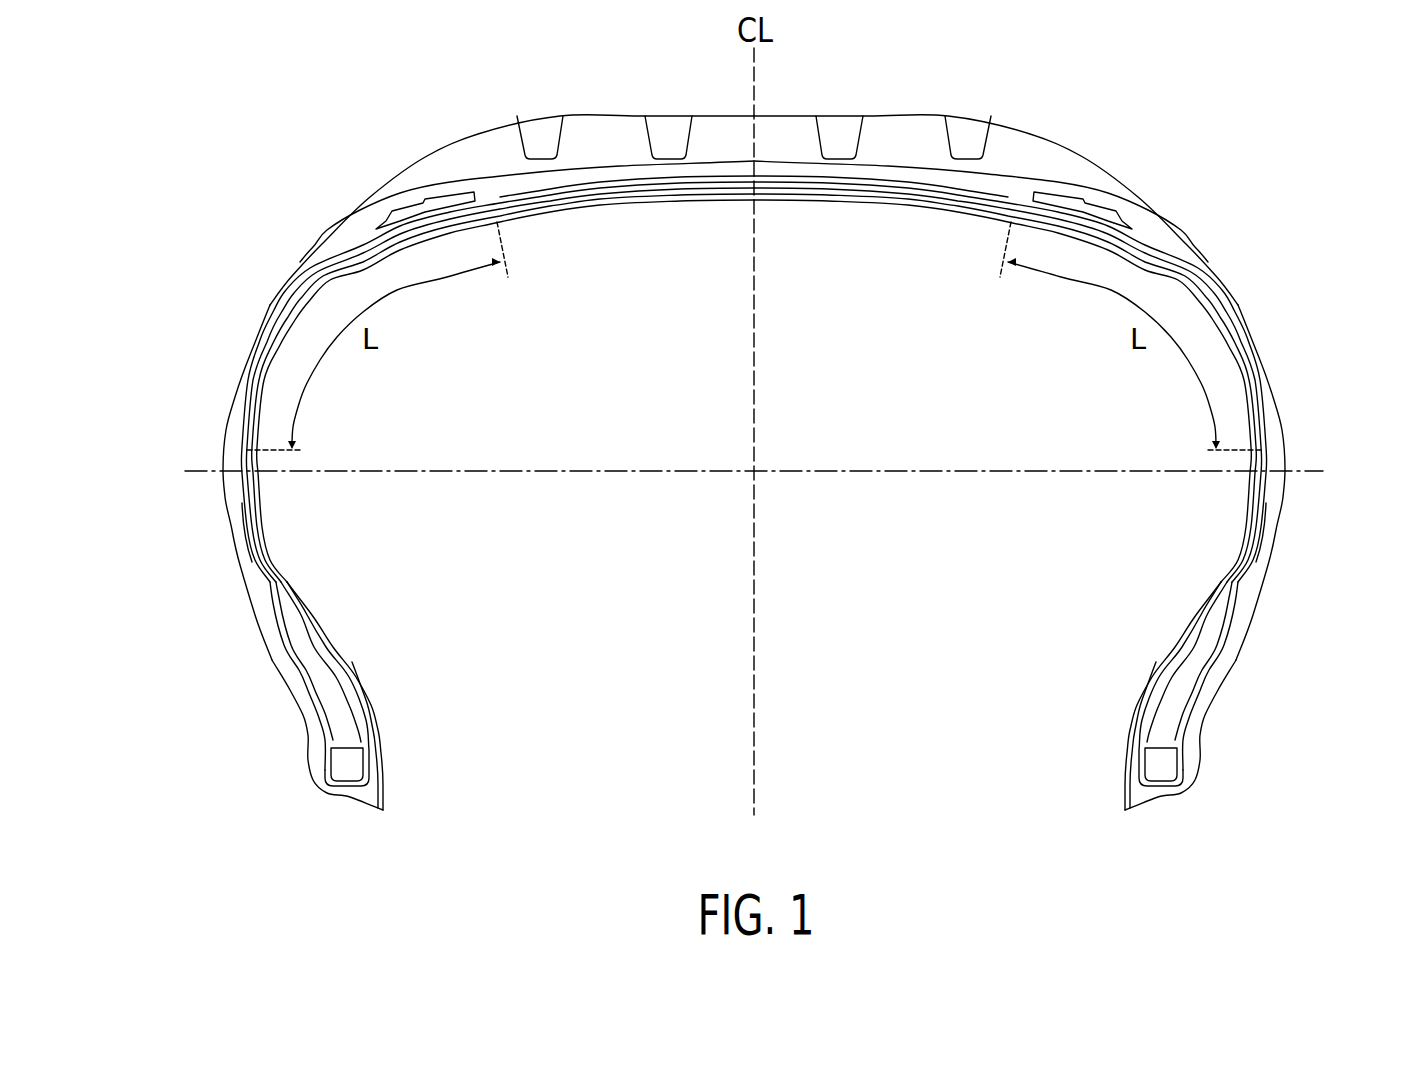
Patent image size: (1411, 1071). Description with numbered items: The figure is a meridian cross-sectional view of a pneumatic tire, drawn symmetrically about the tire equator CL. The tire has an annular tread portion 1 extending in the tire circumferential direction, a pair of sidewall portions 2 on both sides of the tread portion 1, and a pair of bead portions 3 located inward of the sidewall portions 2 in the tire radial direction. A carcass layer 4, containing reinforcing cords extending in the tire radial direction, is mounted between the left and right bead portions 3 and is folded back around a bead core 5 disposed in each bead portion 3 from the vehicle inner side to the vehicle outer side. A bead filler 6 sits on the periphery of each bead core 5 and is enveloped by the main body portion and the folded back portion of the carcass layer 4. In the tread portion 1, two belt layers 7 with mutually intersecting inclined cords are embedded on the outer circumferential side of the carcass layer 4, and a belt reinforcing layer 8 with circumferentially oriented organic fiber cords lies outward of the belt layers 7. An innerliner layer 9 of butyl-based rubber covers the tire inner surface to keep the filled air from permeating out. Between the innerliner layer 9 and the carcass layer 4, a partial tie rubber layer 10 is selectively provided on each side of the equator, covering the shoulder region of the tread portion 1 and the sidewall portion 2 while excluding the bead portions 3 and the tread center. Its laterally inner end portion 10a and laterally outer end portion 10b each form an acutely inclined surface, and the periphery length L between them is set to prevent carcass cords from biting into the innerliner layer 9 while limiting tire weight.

The tread portion 1 is at (791, 106).
The sidewall portion 2 is at (190, 523).
The bead portion 3 is at (286, 754).
The carcass layer 4 is at (783, 198).
The bead core 5 is at (348, 767).
The bead filler 6 is at (325, 679).
The belt layer 7 is at (837, 192).
The belt reinforcing layer 8 is at (424, 201).
The innerliner layer 9 is at (905, 200).
The partial tie rubber layer 10 is at (267, 378).
The end portion inward in the tire lateral direction 10a is at (498, 221).
The end portion outward in the tire lateral direction 10b is at (252, 458).